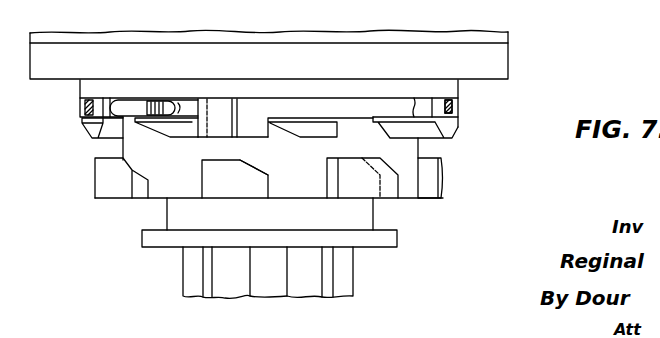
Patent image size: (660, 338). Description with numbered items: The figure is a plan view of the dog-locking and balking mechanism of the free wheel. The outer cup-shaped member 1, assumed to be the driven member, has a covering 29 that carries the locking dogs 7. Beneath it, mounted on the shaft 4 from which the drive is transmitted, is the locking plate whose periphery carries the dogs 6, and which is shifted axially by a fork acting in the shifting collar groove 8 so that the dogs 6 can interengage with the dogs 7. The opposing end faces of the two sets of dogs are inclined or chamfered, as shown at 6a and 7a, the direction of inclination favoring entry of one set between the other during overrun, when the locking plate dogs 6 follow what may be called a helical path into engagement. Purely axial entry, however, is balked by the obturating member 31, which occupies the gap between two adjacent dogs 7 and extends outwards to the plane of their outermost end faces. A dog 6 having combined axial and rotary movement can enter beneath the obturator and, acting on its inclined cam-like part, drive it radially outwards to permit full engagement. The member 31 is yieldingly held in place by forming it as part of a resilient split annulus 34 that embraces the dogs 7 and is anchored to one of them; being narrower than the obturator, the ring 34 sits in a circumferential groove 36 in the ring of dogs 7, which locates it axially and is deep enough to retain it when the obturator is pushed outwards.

The outer cup-shaped member 1 is at (467, 37).
The covering 29 is at (495, 62).
The resilient split annulus 34 is at (355, 108).
The obturating member 31 is at (233, 105).
The inclined end face of locking dog 7a is at (288, 129).
The locking dogs 7 is at (432, 128).
The circumferential groove 36 is at (455, 112).
The dogs 6 is at (123, 188).
The inclined end face of locking plate dog 6a is at (255, 164).
The shifting collar groove 8 is at (382, 220).
The shaft 4 is at (232, 278).